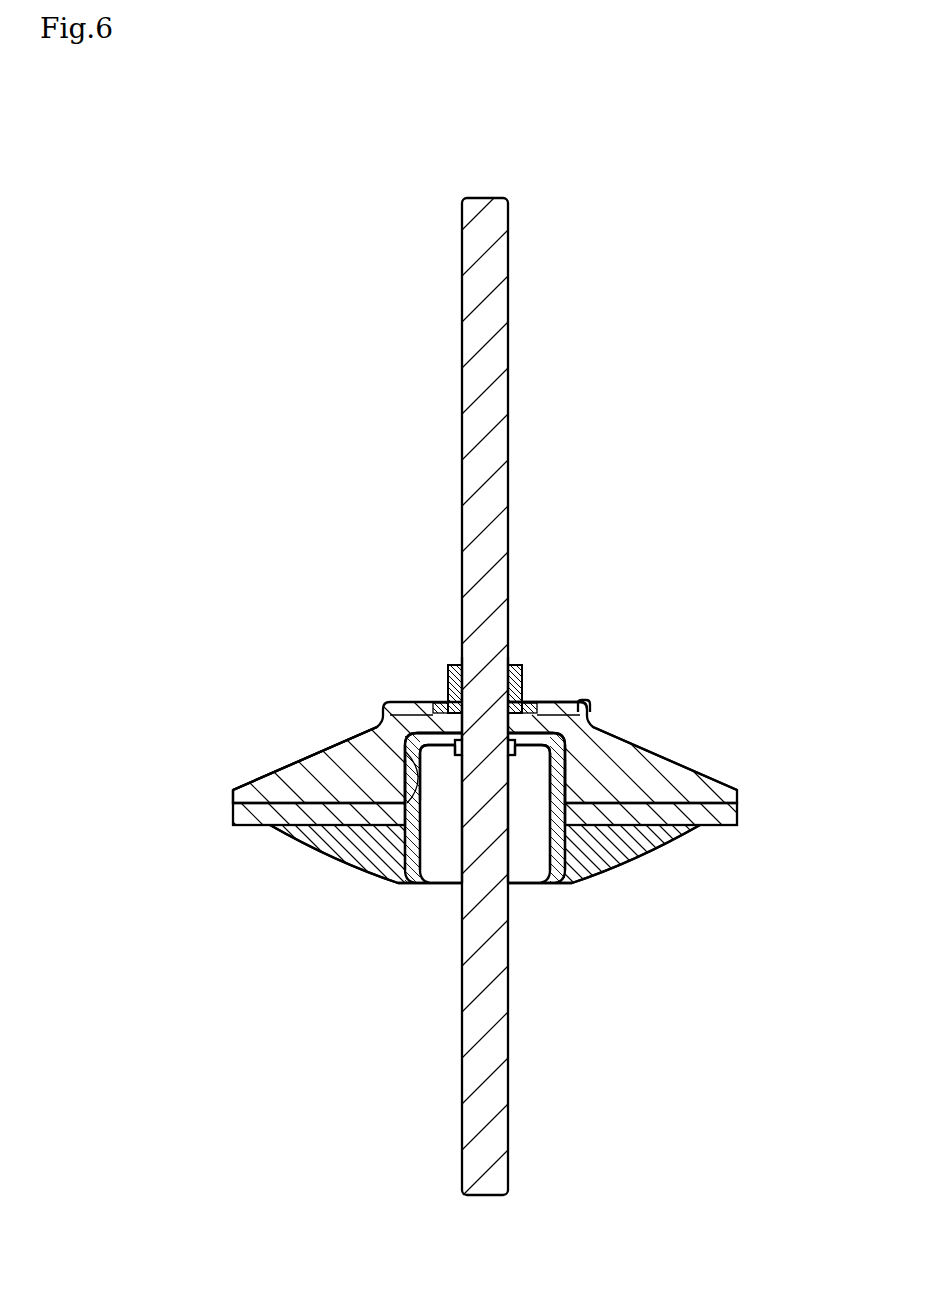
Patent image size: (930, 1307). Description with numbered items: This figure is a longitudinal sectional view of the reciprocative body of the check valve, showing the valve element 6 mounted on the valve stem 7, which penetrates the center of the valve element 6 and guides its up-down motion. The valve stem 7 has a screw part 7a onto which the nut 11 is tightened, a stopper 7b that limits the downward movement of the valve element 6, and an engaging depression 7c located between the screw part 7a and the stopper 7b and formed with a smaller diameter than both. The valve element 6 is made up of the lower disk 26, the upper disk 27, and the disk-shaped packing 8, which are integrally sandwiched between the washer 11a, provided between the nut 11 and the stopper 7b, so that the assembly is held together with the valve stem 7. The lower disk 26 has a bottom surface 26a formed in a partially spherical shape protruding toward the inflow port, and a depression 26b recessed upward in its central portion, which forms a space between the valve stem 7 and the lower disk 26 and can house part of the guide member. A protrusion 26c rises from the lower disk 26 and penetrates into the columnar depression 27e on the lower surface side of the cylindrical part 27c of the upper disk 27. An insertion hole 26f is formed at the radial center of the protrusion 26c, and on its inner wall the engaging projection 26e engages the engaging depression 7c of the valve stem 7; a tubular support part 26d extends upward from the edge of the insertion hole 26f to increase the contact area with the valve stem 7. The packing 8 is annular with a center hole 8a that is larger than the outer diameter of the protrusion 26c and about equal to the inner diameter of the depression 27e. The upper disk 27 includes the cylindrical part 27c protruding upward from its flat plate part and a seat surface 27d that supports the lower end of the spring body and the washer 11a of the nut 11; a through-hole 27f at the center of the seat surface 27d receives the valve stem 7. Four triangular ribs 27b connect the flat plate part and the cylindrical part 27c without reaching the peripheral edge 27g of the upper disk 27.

The valve element 6 is at (464, 746).
The valve stem 7 is at (509, 352).
The screw part 7a is at (514, 657).
The stopper 7b is at (558, 737).
The engaging depression 7c is at (507, 743).
The packing 8 is at (740, 810).
The center hole 8a is at (413, 810).
The nut 11 is at (455, 663).
The washer 11a is at (438, 705).
The lower disk 26 is at (653, 843).
The bottom surface 26a is at (485, 854).
The depression 26b is at (553, 862).
The protrusion 26c is at (567, 768).
The support part 26d is at (442, 703).
The engaging projection 26e is at (458, 752).
The insertion hole 26f is at (485, 750).
The upper disk 27 is at (677, 762).
The ribs 27b is at (485, 758).
The cylindrical part 27c is at (586, 702).
The seat surface 27d is at (563, 710).
The depression 27e is at (362, 738).
The through-hole 27f is at (512, 740).
The peripheral edge 27g is at (233, 790).